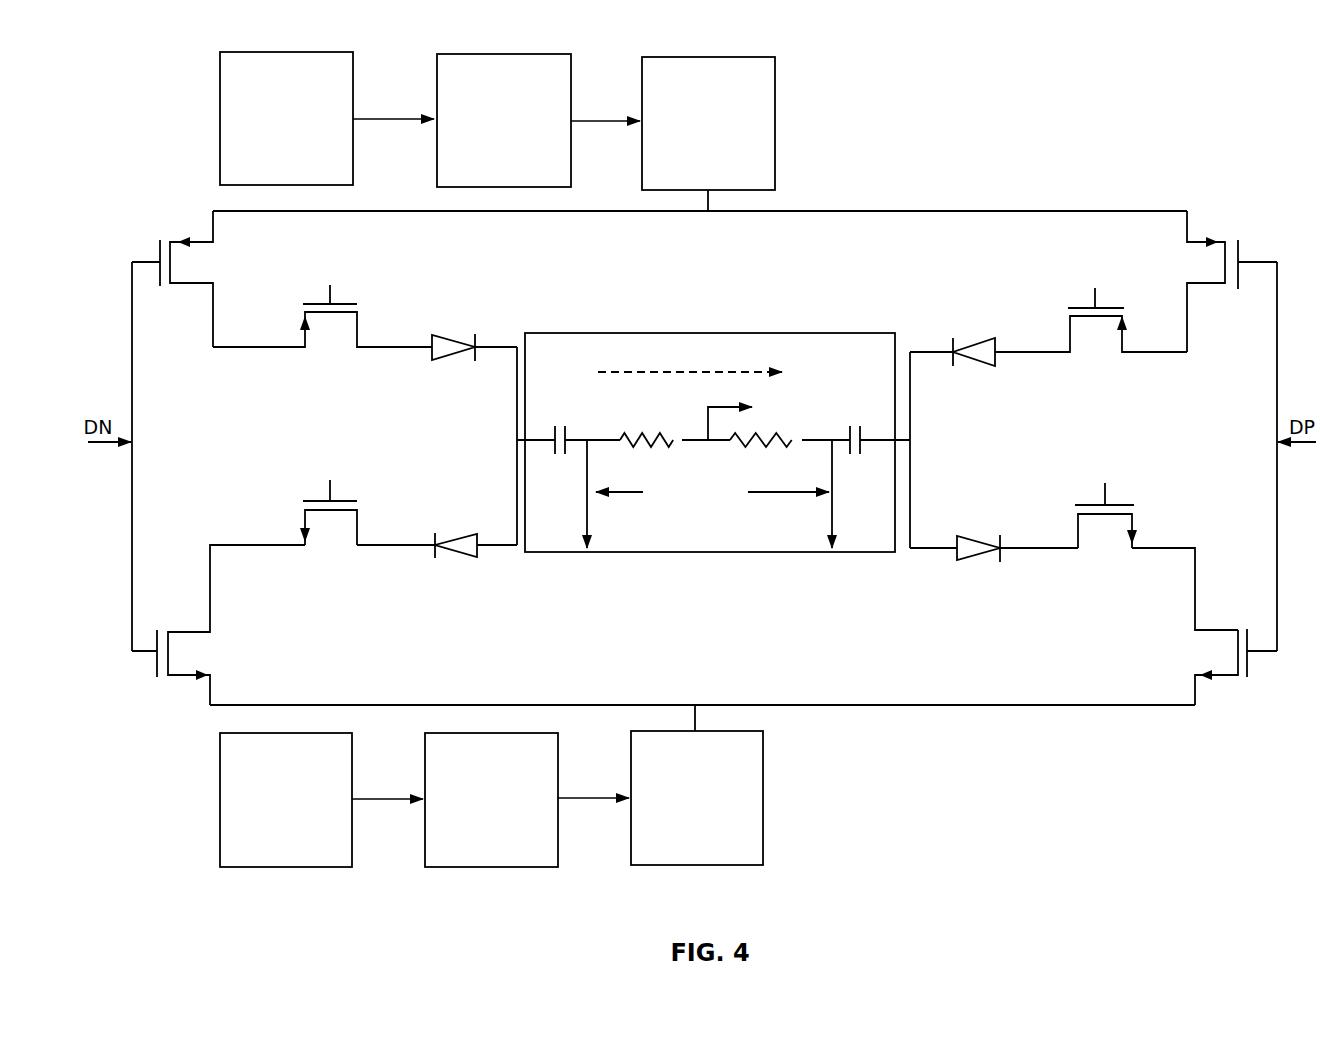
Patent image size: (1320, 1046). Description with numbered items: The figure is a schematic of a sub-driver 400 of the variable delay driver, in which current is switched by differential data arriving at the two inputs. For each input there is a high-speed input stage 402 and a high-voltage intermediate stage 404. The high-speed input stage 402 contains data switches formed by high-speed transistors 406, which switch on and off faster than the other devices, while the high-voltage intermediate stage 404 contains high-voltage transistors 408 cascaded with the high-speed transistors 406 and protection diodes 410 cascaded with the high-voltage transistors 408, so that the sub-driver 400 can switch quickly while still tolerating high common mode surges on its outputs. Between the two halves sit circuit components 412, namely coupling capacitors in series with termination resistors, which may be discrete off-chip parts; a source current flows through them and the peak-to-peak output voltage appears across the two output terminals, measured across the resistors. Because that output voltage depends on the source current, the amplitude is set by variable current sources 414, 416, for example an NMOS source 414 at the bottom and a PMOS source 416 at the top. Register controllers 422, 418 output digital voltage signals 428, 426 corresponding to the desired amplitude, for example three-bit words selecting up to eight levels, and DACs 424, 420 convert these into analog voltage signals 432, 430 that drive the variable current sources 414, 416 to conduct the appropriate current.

The sub-driver 400 is at (1194, 104).
The high-speed input stage 402 is at (203, 746).
The high-voltage intermediate stage 404 is at (385, 613).
The high-speed transistor 406 is at (190, 286).
The high-voltage transistor 408 is at (360, 336).
The protection diode 410 is at (447, 335).
The circuit components 412 is at (572, 332).
The variable current source 414 is at (763, 800).
The variable current source 416 is at (775, 125).
The register controller 418 is at (220, 155).
The Digital to Analog Converter 420 is at (540, 131).
The register controller 422 is at (220, 838).
The Digital to Analog Converter 424 is at (528, 809).
The voltage signal 426 is at (393, 102).
The voltage signal 428 is at (387, 781).
The analog voltage signal 430 is at (605, 103).
The analog voltage signal 432 is at (593, 780).